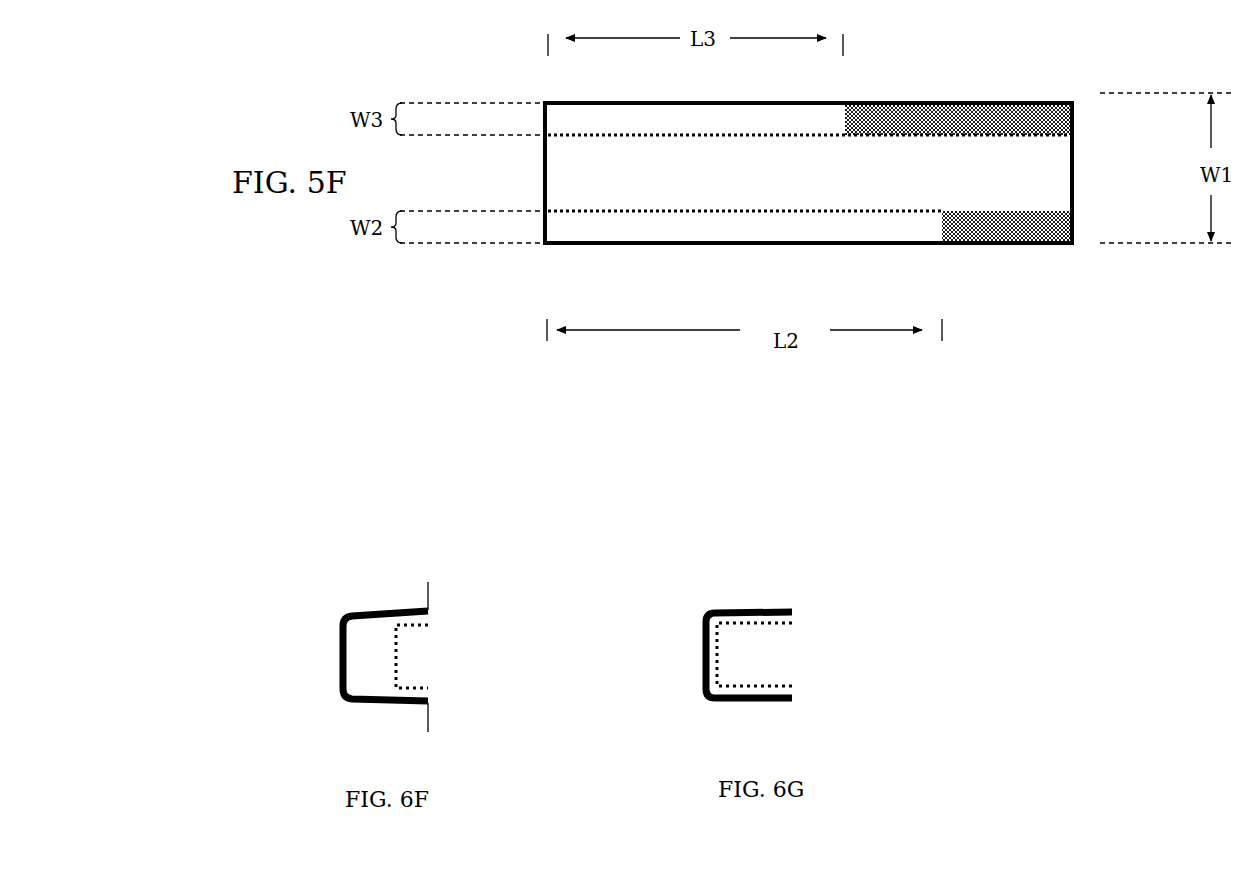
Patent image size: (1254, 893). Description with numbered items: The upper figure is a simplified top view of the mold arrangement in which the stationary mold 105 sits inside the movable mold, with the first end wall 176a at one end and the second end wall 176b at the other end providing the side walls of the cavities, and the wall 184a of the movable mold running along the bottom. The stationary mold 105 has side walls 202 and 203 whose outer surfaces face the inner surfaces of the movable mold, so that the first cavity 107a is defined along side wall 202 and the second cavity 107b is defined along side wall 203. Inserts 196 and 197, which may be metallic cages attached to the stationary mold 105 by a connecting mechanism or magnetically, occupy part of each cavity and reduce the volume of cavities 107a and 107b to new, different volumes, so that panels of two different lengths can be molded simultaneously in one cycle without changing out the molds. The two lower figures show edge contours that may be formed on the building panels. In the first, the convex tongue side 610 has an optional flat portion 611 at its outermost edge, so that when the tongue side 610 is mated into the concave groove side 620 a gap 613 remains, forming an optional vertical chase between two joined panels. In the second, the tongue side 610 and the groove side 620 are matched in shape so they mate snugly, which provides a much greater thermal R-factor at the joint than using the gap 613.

In FIG. 5F, the stationary mold 105 is at (819, 189).
In FIG. 5F, the first cavity 107a is at (822, 232).
In FIG. 5F, the second cavity 107b is at (802, 125).
In FIG. 5F, the first end wall 176a is at (543, 168).
In FIG. 5F, the second end wall 176b is at (1075, 178).
In FIG. 5F, the wall of the movable mold 184a is at (665, 245).
In FIG. 5F, the insert 196 is at (975, 112).
In FIG. 5F, the insert 197 is at (1015, 242).
In FIG. 5F, the side wall of the stationary mold 202 is at (575, 212).
In FIG. 5F, the side wall of the stationary mold 203 is at (575, 130).
In FIG. 6G, the tongue side 610 is at (748, 678).
In FIG. 6F, the flat portion 611 is at (395, 680).
In FIG. 6F, the gap 613 is at (365, 655).
In FIG. 6F, the groove side 620 is at (362, 611).
In FIG. 6G, the groove side 620 is at (697, 633).